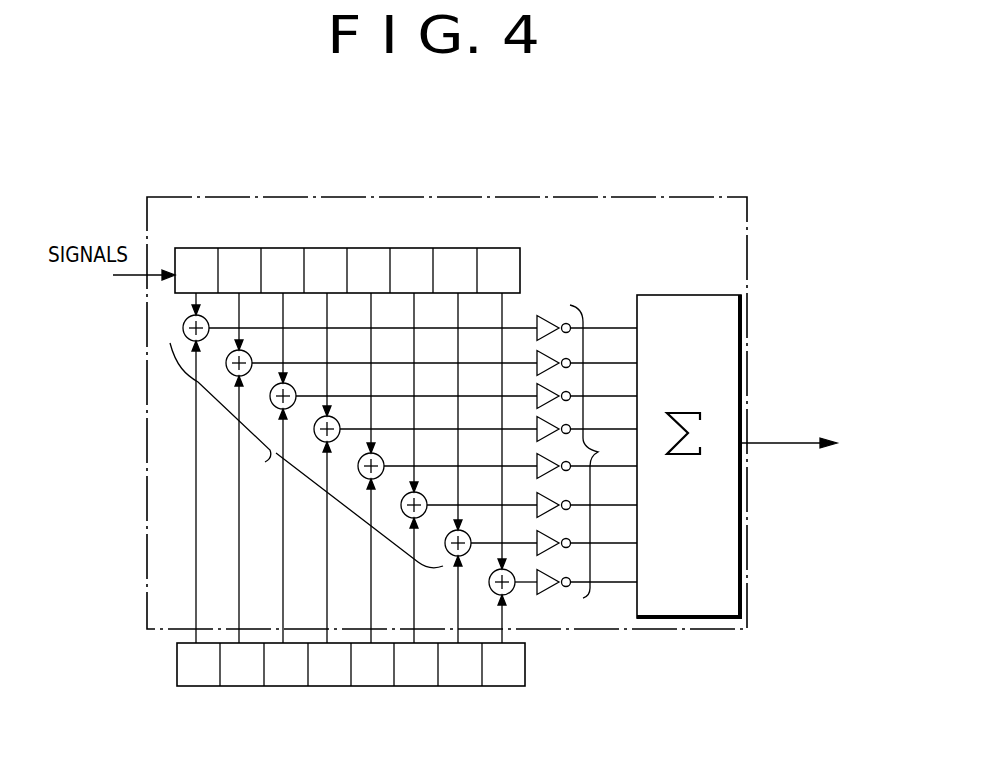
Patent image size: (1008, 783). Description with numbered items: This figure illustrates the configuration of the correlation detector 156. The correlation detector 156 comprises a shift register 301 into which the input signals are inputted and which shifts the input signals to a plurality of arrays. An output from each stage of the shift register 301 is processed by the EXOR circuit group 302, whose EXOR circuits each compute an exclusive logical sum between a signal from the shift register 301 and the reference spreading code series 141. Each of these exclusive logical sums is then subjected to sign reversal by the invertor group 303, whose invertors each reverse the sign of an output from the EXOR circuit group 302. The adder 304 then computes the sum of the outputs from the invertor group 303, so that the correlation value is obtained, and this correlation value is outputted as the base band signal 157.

The correlation detector 156 is at (630, 197).
The shift register 301 is at (418, 249).
The EXOR circuit group 302 is at (266, 459).
The invertor group 303 is at (600, 452).
The adder 304 is at (727, 560).
The reference spreading code series 141 is at (495, 684).
The base band signal 157 is at (790, 445).